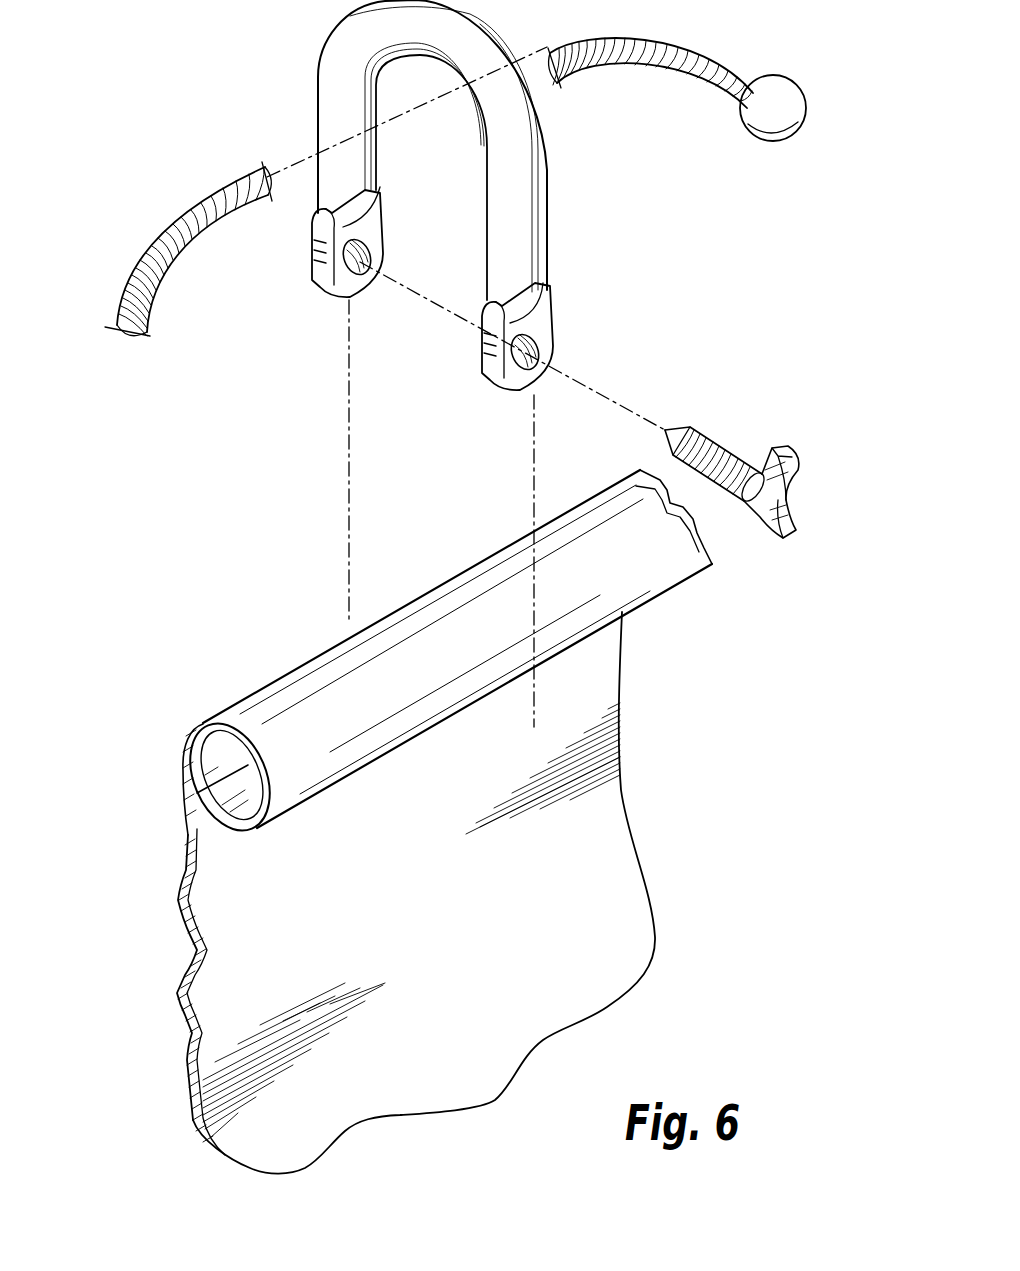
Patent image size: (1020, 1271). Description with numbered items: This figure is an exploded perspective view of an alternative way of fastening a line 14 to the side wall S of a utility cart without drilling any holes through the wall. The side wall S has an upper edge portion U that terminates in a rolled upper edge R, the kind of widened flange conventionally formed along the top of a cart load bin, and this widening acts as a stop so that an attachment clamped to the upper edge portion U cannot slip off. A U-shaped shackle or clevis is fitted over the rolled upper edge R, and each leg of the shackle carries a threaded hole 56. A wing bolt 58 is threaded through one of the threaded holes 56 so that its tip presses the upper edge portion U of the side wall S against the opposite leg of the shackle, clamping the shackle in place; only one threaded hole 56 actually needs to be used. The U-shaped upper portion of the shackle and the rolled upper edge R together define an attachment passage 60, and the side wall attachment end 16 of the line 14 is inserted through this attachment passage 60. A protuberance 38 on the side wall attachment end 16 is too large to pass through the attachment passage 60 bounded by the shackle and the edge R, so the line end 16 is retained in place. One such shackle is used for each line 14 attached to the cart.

The line 14 is at (160, 233).
The side wall attachment end 16 is at (637, 65).
The protuberance 38 is at (797, 114).
The threaded hole 56 is at (360, 263).
The bolt 58 is at (730, 448).
The attachment passage 60 is at (427, 118).
The rolled upper edge R is at (248, 683).
The upper edge portion U is at (586, 665).
The side wall S is at (474, 941).